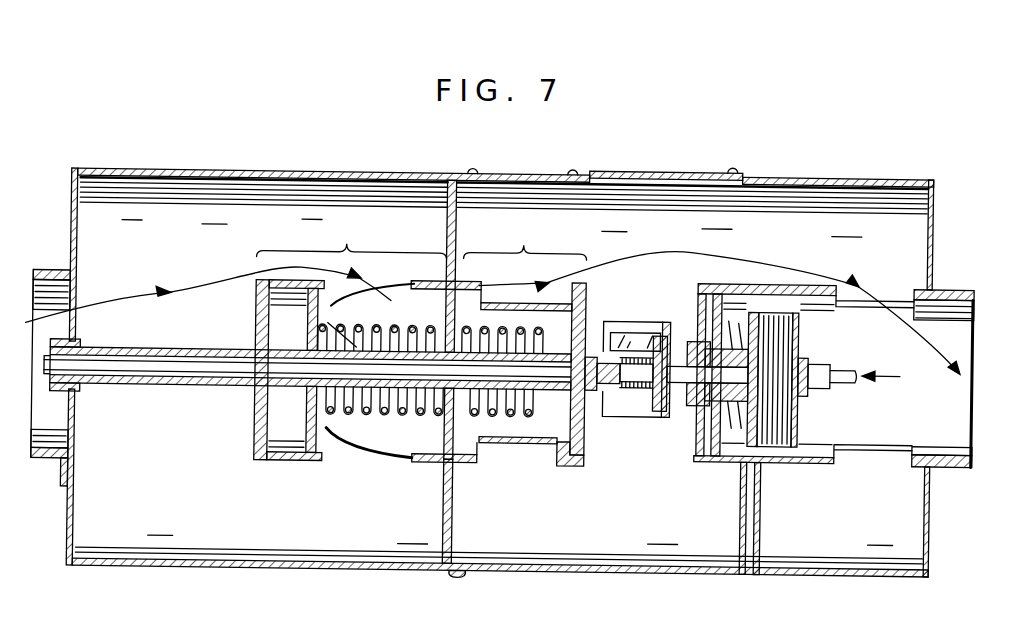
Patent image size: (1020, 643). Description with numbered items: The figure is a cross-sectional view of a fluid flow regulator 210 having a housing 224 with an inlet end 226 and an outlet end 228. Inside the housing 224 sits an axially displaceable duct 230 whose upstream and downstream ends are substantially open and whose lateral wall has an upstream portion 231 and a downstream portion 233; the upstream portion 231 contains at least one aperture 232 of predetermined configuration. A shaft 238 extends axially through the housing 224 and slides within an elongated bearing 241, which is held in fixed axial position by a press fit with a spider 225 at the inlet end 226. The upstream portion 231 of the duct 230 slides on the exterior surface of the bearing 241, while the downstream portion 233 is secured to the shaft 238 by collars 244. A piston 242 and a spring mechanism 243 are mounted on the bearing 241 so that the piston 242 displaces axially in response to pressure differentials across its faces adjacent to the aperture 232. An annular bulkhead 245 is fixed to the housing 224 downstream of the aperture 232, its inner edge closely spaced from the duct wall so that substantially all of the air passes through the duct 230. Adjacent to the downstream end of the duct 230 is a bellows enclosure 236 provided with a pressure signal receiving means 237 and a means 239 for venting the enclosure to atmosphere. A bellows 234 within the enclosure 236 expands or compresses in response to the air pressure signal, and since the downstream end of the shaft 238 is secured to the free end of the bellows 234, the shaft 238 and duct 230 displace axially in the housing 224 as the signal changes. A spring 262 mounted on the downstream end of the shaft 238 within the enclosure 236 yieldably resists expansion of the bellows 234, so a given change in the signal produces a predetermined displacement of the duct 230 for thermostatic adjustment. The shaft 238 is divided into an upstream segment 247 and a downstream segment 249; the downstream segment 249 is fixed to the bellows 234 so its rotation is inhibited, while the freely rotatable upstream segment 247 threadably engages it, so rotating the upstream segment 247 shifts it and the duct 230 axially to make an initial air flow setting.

The flow regulator 210 is at (193, 166).
The housing 224 is at (320, 171).
The spider 225 is at (68, 396).
The inlet end 226 is at (47, 268).
The outlet end 228 is at (948, 277).
The axially displaceable duct 230 is at (455, 470).
The upstream portion 231 is at (368, 338).
The aperture 232 is at (352, 439).
The downstream portion 233 is at (524, 328).
The bellows 234 is at (768, 439).
The bellows enclosure 236 is at (730, 460).
The pressure signal receiving means 237 is at (816, 378).
The shaft 238 is at (137, 352).
The means for venting 239 is at (752, 529).
The elongated bearing 241 is at (182, 382).
The piston 242 is at (300, 446).
The spring mechanism 243 is at (463, 423).
The collars 244 is at (585, 334).
The annular bulkhead 245 is at (443, 518).
The upstream segment 247 is at (597, 429).
The downstream segment 249 is at (680, 375).
The spring 262 is at (732, 334).